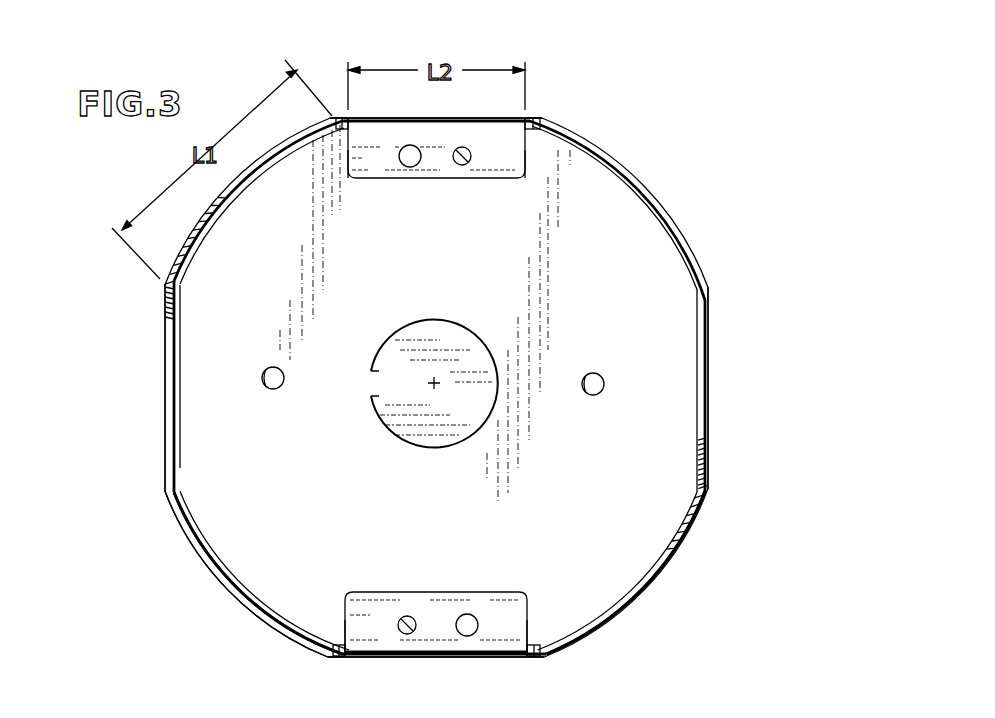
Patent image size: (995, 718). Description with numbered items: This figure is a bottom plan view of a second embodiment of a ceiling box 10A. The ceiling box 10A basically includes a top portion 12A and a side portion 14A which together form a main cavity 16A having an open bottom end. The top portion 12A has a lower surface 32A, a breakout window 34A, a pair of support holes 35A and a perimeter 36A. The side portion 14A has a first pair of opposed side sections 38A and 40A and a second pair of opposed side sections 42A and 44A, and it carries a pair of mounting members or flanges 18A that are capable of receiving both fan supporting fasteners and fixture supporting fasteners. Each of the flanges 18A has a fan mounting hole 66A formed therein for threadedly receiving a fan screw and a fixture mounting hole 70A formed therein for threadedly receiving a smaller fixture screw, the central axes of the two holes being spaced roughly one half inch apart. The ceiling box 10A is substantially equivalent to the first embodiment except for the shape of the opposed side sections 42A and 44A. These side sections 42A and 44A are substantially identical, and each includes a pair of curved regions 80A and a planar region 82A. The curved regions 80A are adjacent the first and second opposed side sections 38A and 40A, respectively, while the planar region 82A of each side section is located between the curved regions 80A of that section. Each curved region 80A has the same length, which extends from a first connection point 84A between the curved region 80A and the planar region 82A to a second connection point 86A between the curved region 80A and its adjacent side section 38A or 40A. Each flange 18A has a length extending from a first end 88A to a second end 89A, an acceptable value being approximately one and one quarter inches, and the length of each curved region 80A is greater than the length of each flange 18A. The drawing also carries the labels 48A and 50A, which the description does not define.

The ceiling box 10A is at (128, 169).
The top portion 12A is at (646, 275).
The side portion 14A is at (200, 569).
The main cavity 16A is at (660, 459).
The mounting flange 18A is at (377, 157).
The lower surface 32A is at (368, 500).
The breakout window 34A is at (427, 342).
The support hole 35A is at (264, 367).
The perimeter 36A is at (163, 289).
The first side section 38A is at (532, 113).
The second side section 40A is at (540, 657).
The side section 42A is at (160, 408).
The side section 44A is at (709, 370).
The lower left arcuate side 48A is at (260, 618).
The center point 50A is at (438, 380).
The fan mounting hole 66A is at (404, 167).
The fixture mounting hole 70A is at (467, 166).
The curved region 80A is at (605, 150).
The planar region 82A is at (709, 415).
The first connection point 84A is at (180, 287).
The second connection point 86A is at (333, 115).
The first end 88A is at (352, 152).
The second end 89A is at (536, 145).